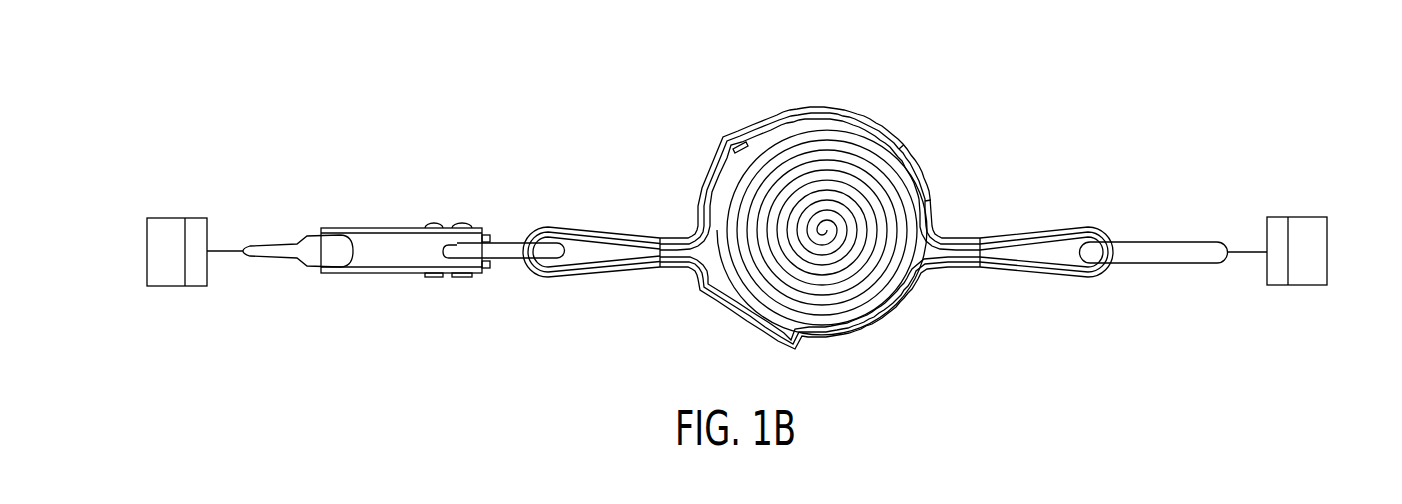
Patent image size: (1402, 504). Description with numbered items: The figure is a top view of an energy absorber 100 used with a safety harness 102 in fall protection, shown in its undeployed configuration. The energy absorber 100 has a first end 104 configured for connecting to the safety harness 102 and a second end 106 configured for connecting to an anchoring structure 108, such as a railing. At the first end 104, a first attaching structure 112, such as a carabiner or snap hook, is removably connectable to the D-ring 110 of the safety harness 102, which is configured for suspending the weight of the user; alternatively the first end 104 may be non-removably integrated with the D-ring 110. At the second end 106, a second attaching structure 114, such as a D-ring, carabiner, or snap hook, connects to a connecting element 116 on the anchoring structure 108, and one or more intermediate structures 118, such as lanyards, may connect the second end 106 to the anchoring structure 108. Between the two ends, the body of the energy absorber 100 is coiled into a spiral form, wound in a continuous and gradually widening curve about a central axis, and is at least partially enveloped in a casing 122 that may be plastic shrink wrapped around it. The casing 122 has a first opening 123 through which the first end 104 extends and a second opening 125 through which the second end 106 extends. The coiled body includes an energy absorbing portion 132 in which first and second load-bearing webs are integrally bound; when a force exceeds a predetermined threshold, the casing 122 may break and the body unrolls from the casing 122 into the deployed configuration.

The energy absorber 100 is at (734, 206).
The safety harness 102 is at (165, 266).
The first end 104 is at (451, 250).
The second end 106 is at (1095, 243).
The anchoring structure 108 is at (1299, 265).
The D-ring 110 is at (173, 346).
The first attaching structure 112 is at (368, 320).
The second attaching structure 114 is at (1160, 312).
The connecting element 116 is at (1297, 297).
The intermediate structure 118 is at (1243, 253).
The casing 122 is at (820, 207).
The first opening 123 is at (591, 206).
The second opening 125 is at (980, 268).
The energy absorbing portion 132 is at (824, 254).